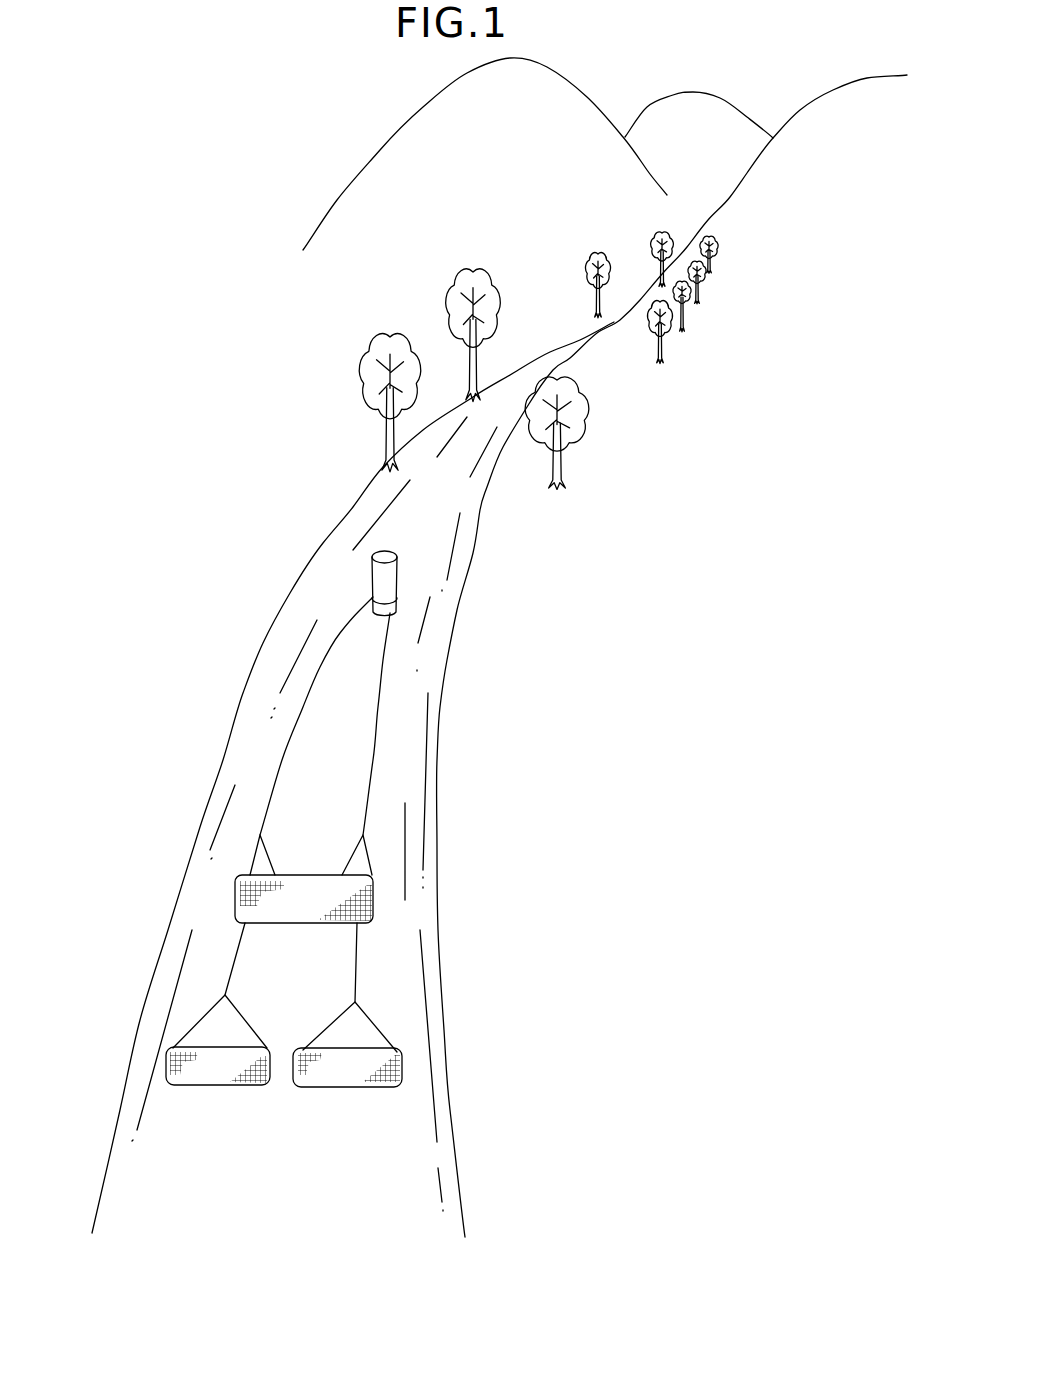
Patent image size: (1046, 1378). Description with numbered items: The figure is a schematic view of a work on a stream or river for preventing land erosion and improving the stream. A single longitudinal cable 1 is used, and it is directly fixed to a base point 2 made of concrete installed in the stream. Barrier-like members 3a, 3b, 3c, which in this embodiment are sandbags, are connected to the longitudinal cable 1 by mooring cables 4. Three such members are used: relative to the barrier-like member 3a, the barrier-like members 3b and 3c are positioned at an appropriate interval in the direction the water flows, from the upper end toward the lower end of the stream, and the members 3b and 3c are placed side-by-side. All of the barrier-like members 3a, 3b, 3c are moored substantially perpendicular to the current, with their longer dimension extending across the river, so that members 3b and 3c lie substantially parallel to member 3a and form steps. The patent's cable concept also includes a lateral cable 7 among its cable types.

The longitudinal cable 1 is at (380, 703).
The base point 2 is at (393, 552).
The barrier-like member 3a is at (368, 892).
The barrier-like member 3b is at (393, 1058).
The barrier-like member 3c is at (170, 1063).
The mooring cable 4 is at (370, 860).
The lateral cable 7 is at (499, 656).